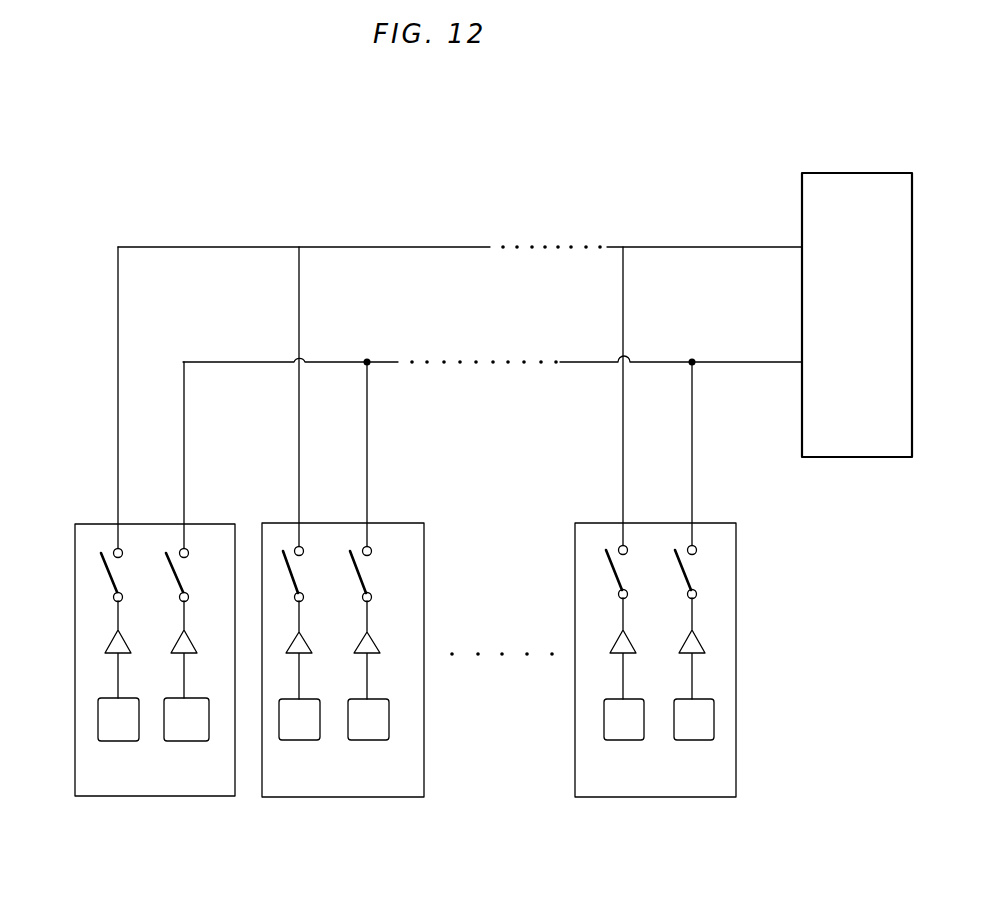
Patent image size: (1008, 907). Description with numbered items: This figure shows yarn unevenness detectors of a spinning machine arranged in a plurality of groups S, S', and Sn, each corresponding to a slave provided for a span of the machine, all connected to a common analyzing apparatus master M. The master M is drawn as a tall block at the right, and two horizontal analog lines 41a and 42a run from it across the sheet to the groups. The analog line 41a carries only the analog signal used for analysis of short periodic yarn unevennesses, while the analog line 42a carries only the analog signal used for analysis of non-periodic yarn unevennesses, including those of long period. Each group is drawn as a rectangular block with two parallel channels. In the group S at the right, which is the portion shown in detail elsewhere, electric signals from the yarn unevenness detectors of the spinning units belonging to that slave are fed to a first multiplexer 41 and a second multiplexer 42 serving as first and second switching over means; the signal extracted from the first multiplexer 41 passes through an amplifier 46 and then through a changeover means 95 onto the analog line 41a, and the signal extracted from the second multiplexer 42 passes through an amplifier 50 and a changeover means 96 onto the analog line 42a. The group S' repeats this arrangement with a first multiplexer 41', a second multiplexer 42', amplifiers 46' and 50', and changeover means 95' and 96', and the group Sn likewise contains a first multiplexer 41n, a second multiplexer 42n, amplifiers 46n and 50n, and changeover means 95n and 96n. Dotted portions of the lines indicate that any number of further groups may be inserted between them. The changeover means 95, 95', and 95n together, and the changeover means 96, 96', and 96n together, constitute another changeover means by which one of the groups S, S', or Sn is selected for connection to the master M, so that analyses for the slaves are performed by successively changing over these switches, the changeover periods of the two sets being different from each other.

The analyzing apparatus master M is at (832, 173).
The analog line 41a is at (735, 247).
The analog line 42a is at (728, 363).
The changeover means 95 is at (575, 557).
The changeover means 96 is at (735, 563).
The amplifier 46 is at (581, 648).
The amplifier 50 is at (736, 648).
The first multiplexer 41 is at (583, 719).
The second multiplexer 42 is at (740, 719).
The slave S is at (664, 690).
The changeover means 95n is at (100, 570).
The changeover means 96n is at (180, 575).
The amplifier 46n is at (107, 641).
The amplifier 50n is at (188, 652).
The first multiplexer 41n is at (105, 741).
The second multiplexer 42n is at (195, 741).
The group of yarn unevenness detectors Sn is at (125, 797).
The changeover means 95' is at (319, 537).
The changeover means 96' is at (404, 537).
The amplifier 46' is at (319, 644).
The amplifier 50' is at (414, 644).
The first multiplexer 41' is at (299, 775).
The second multiplexer 42' is at (413, 717).
The group of yarn unevenness detectors S' is at (343, 693).